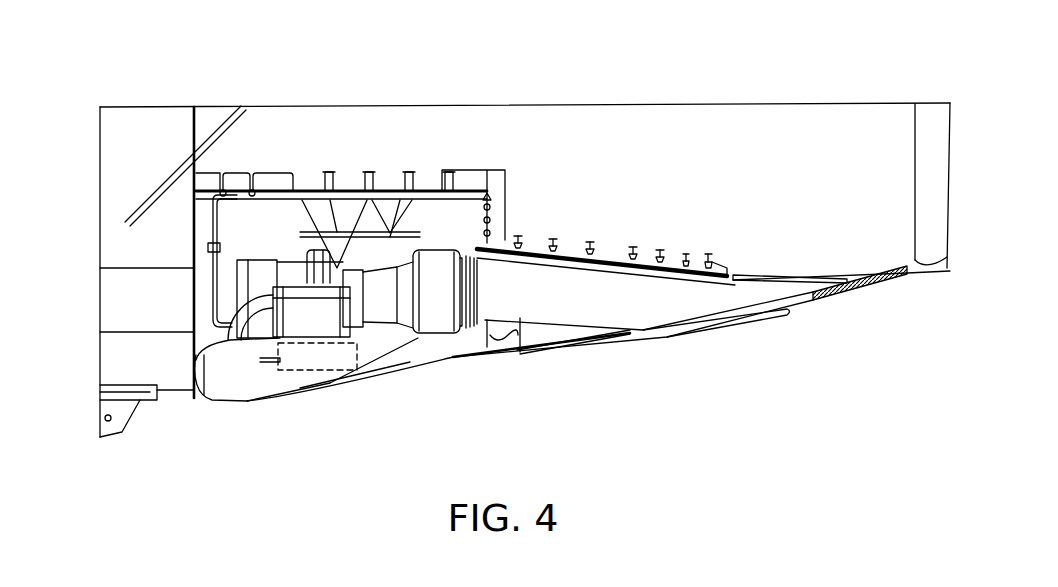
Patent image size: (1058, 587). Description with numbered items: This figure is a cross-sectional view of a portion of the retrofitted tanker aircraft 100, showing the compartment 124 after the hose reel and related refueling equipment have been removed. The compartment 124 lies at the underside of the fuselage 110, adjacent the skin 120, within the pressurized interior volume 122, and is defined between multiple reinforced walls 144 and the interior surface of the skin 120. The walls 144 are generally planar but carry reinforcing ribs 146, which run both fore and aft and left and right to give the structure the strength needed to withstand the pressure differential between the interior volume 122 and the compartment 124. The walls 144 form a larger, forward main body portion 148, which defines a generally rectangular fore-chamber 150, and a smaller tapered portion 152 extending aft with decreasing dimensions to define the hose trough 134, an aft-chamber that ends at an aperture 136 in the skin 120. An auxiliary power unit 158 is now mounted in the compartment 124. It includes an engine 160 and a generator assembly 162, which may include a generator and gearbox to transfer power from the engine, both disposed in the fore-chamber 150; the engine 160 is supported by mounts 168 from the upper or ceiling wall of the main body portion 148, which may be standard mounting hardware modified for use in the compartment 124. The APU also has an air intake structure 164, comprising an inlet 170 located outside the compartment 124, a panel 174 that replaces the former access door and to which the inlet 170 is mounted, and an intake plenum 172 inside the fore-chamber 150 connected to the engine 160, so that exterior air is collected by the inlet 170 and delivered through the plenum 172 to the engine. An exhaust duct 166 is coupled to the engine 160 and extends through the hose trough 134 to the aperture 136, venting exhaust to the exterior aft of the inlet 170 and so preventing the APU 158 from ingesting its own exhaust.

The aircraft 100 is at (143, 93).
The fuselage 110 is at (885, 122).
The skin 120 is at (528, 350).
The interior volume 122 is at (768, 165).
The compartment 124 is at (470, 158).
The hose trough 134 is at (543, 333).
The aperture 136 is at (822, 302).
The reinforced walls 144 is at (207, 222).
The reinforcing ribs 146 is at (330, 172).
The main body portion 148 is at (230, 170).
The fore-chamber 150 is at (467, 215).
The tapered portion 152 is at (632, 250).
The auxiliary power unit (APU) 158 is at (437, 338).
The engine 160 is at (430, 260).
The generator assembly 162 is at (257, 270).
The air intake structure 164 is at (230, 333).
The exhaust duct 166 is at (775, 295).
The mounts 168 is at (357, 216).
The inlet 170 is at (243, 393).
The intake plenum 172 is at (323, 380).
The panel 174 is at (410, 363).